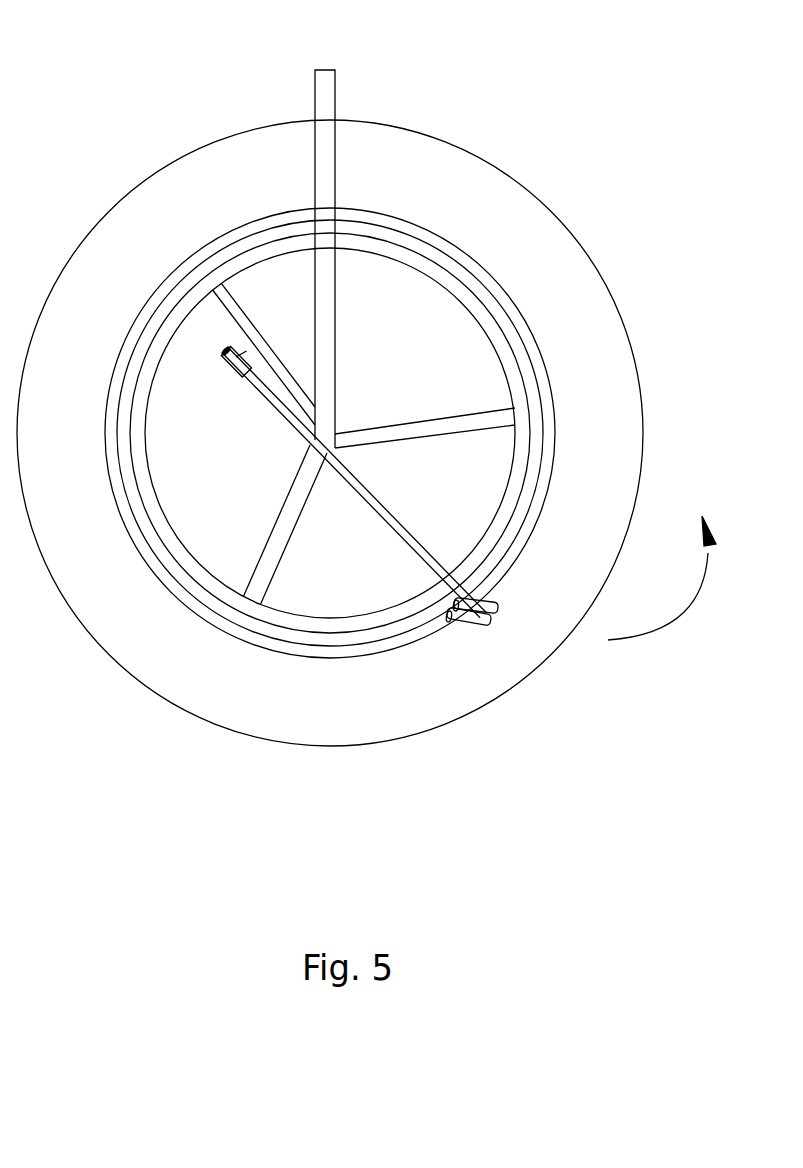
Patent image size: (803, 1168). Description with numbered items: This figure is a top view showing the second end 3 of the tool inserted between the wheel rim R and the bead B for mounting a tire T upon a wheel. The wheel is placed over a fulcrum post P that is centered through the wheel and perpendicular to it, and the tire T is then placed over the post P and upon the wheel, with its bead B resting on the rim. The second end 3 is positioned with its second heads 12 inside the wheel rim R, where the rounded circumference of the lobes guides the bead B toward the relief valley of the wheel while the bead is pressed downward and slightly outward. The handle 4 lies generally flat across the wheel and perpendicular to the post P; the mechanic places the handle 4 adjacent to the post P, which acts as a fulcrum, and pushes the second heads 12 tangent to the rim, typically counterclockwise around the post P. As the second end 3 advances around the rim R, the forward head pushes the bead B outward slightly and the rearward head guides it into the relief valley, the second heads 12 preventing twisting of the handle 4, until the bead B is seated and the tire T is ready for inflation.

The fulcrum post P is at (325, 100).
The wheel rim R is at (520, 443).
The tire T is at (592, 496).
The bead B is at (370, 655).
The handle 4 is at (363, 489).
The second end 3 is at (508, 621).
The second heads 12 is at (446, 617).